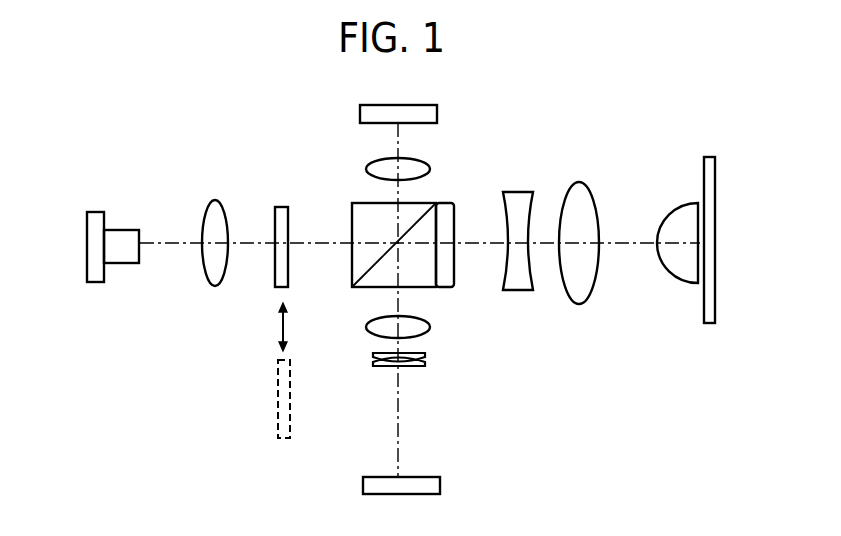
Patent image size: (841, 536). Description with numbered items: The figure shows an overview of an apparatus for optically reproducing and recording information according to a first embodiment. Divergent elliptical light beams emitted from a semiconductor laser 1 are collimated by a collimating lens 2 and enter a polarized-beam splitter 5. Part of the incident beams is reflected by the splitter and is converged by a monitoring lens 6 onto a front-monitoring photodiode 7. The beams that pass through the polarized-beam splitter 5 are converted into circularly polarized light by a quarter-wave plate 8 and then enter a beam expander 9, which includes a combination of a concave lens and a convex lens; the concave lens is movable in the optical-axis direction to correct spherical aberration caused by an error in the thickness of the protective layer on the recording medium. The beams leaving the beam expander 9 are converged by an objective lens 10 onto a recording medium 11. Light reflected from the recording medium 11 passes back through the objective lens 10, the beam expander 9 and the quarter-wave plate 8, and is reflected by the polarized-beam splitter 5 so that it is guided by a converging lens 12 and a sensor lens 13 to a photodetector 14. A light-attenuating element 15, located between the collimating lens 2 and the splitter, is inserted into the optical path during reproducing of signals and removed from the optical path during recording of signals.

The semiconductor laser 1 is at (104, 213).
The collimating lens 2 is at (214, 205).
The polarized-beam splitter 5 is at (352, 204).
The monitoring lens 6 is at (429, 166).
The front-monitoring photodiode 7 is at (438, 114).
The quarter-wave plate 8 is at (447, 289).
The beam expander 9 is at (603, 305).
The objective lens 10 is at (675, 279).
The recording medium 11 is at (709, 324).
The converging lens 12 is at (367, 328).
The sensor lens 13 is at (373, 363).
The photodetector 14 is at (363, 486).
The light-attenuating element 15 is at (275, 276).